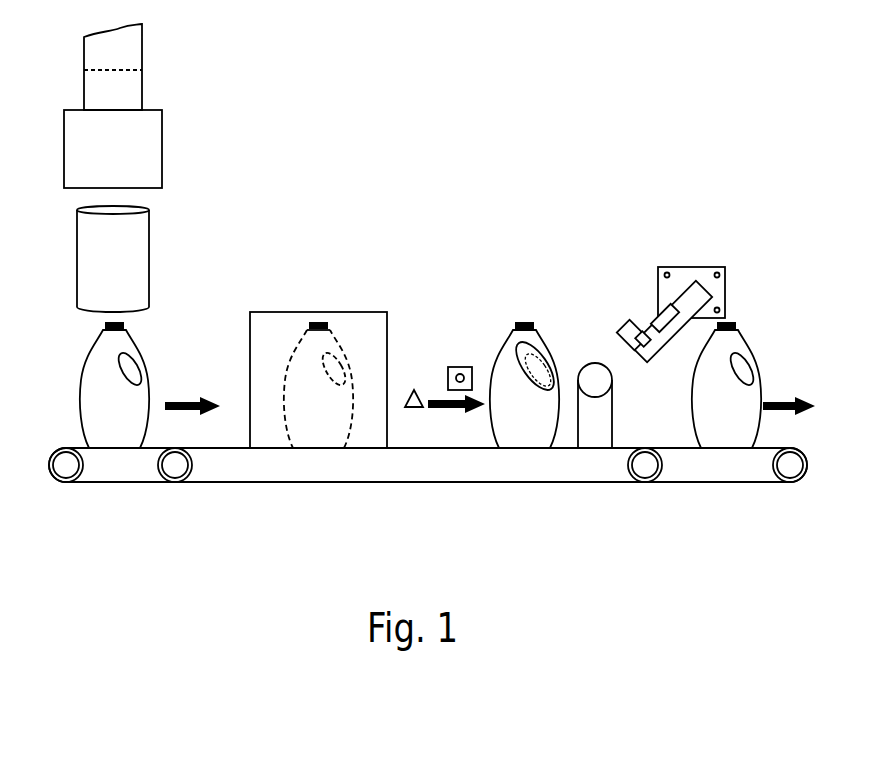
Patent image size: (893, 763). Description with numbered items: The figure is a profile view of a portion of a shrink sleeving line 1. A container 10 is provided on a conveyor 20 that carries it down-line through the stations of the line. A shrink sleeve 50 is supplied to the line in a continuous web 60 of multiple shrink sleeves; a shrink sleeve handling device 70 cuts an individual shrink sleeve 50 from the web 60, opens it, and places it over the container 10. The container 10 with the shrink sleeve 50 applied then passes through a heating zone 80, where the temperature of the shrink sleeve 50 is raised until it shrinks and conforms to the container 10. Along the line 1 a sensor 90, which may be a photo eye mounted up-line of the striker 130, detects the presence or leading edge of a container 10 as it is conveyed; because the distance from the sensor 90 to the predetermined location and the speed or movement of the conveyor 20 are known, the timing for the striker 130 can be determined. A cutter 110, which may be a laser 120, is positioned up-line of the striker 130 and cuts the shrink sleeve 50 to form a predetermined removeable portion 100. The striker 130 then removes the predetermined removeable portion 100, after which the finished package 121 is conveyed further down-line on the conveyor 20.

The shrink sleeving line 1 is at (70, 363).
The container 10 is at (95, 420).
The conveyor 20 is at (78, 448).
The shrink sleeve 50 is at (122, 262).
The continuous web 60 is at (122, 92).
The shrink sleeve handling device 70 is at (140, 158).
The heating zone 80 is at (280, 323).
The sensor 90 is at (418, 388).
The predetermined removeable portion 100 is at (545, 390).
The cutter 110 is at (457, 366).
The laser 120 is at (472, 370).
The finished package 121 is at (712, 397).
The striker 130 is at (619, 342).